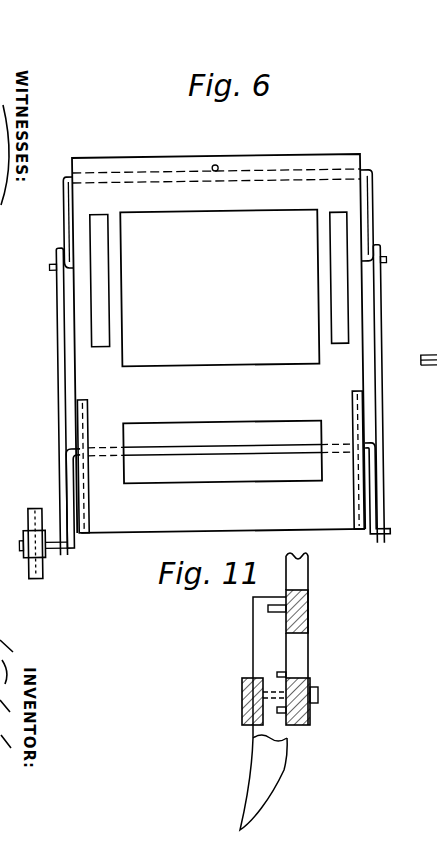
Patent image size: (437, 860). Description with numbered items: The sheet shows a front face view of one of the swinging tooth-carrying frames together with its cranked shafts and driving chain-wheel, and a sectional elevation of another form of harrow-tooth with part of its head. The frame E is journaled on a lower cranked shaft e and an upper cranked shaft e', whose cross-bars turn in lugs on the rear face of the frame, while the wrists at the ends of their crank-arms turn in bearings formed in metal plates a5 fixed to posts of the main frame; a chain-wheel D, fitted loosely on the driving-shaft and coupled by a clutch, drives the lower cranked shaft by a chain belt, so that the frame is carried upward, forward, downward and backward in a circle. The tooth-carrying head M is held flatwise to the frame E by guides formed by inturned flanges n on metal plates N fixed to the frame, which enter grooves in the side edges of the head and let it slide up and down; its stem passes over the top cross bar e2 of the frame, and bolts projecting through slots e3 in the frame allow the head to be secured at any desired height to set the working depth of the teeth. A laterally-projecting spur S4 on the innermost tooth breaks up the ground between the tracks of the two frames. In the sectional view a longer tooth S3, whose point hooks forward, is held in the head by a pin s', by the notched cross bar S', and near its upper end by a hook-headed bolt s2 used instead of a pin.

In FIG. 6, the tooth-carrying frame E is at (218, 343).
In FIG. 6, the upper cranked shaft e' is at (215, 309).
In FIG. 6, the top cross bar e2 is at (216, 185).
In FIG. 6, the slots e3 is at (219, 279).
In FIG. 6, the metal plates a5 is at (55, 373).
In FIG. 6, the tooth-carrying head M is at (399, 266).
In FIG. 6, the laterally-projecting tooth or spur S4 is at (420, 372).
In FIG. 6, the metal plates N is at (74, 431).
In FIG. 6, the inturned flanges n is at (348, 430).
In FIG. 6, the lower cranked shaft e is at (216, 495).
In FIG. 6, the chain-wheel D is at (20, 556).
In FIG. 11, the longer teeth S3 is at (263, 713).
In FIG. 11, the pins s' is at (256, 671).
In FIG. 11, the cross bar S' is at (250, 701).
In FIG. 11, the hook-headed bolts s2 is at (320, 697).